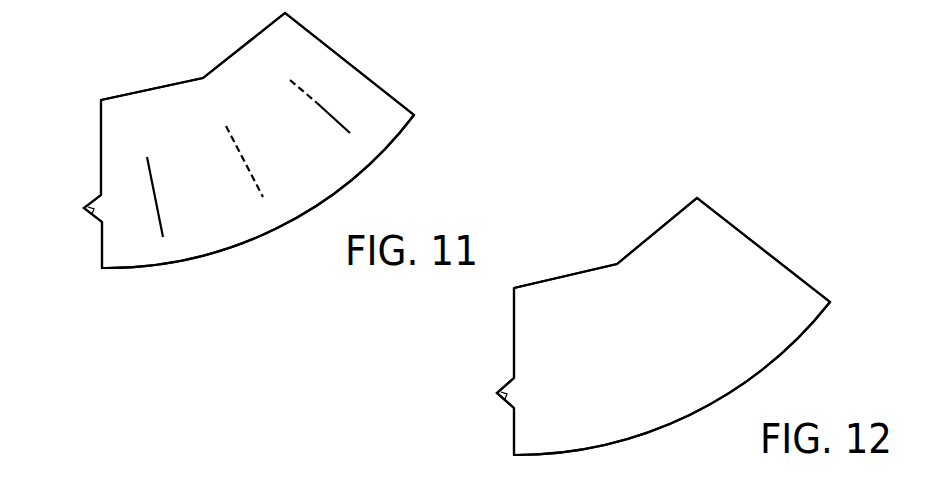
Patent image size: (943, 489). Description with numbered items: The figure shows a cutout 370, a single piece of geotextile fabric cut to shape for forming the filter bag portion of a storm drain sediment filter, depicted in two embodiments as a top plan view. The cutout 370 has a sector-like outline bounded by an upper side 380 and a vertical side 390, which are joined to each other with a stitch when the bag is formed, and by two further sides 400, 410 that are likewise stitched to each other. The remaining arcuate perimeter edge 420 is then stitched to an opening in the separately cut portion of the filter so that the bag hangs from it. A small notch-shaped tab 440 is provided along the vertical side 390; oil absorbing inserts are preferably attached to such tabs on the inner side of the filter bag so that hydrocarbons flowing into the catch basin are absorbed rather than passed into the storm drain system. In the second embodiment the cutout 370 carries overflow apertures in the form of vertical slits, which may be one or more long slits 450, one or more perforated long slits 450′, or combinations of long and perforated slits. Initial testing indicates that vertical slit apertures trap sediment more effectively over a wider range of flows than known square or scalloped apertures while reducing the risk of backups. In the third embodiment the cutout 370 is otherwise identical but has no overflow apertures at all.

In FIG. 11, the cutout 370 is at (355, 98).
In FIG. 12, the cutout 370 is at (768, 284).
In FIG. 11, the side 380 is at (335, 53).
In FIG. 12, the side 380 is at (748, 239).
In FIG. 11, the side 400 is at (247, 44).
In FIG. 12, the side 400 is at (660, 229).
In FIG. 11, the side 410 is at (143, 92).
In FIG. 12, the side 410 is at (556, 278).
In FIG. 11, the side 390 is at (101, 156).
In FIG. 12, the side 390 is at (514, 342).
In FIG. 11, the perimeter edge 420 is at (380, 157).
In FIG. 12, the perimeter edge 420 is at (793, 343).
In FIG. 11, the tab 440 is at (93, 205).
In FIG. 12, the tab 440 is at (504, 400).
In FIG. 11, the long slit 450 is at (163, 220).
In FIG. 11, the perforated long slit 450′ is at (252, 175).